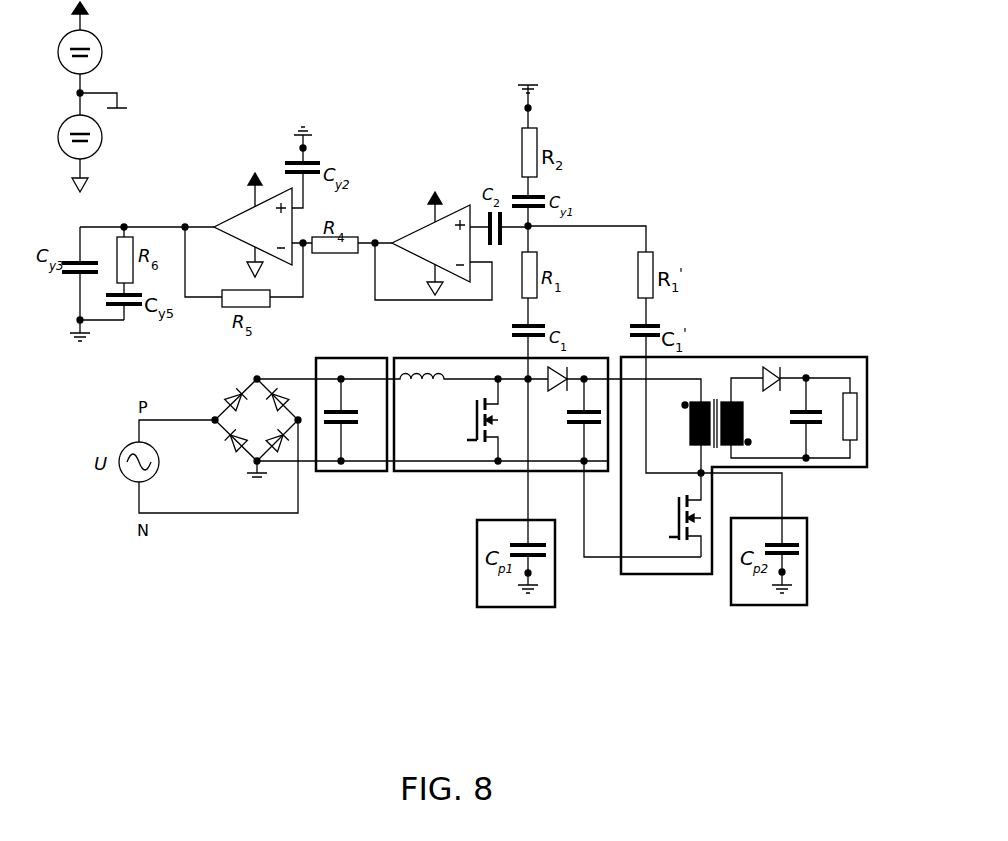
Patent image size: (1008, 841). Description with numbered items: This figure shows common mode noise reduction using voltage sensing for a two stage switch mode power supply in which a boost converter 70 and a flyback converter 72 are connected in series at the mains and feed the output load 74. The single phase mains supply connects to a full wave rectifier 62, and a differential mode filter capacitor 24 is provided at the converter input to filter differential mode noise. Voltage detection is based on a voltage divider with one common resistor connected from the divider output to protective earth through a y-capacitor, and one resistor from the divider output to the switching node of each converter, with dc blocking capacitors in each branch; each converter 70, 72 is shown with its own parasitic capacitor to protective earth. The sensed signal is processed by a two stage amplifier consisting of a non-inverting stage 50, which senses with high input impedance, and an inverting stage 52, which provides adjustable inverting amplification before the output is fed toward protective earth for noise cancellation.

The differential mode filter capacitor 24 is at (360, 472).
The non-inverting stage 50 is at (412, 191).
The inverting stage 52 is at (188, 181).
The full wave rectifier 62 is at (208, 392).
The boost converter 70 is at (454, 472).
The flyback converter 72 is at (744, 435).
The output load 74 is at (858, 412).